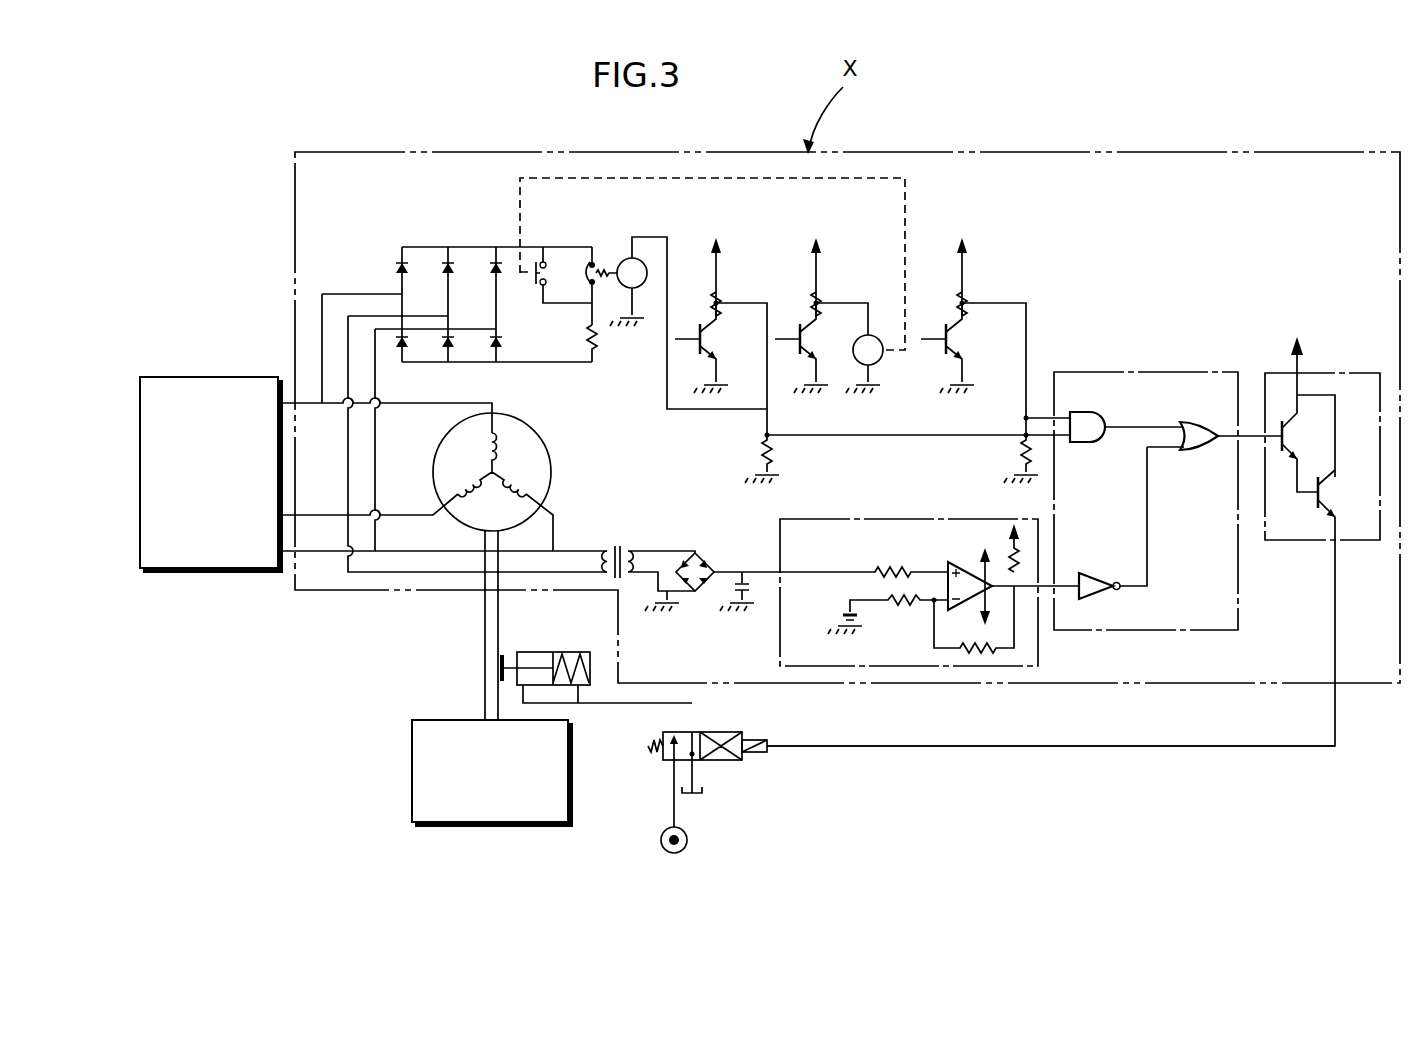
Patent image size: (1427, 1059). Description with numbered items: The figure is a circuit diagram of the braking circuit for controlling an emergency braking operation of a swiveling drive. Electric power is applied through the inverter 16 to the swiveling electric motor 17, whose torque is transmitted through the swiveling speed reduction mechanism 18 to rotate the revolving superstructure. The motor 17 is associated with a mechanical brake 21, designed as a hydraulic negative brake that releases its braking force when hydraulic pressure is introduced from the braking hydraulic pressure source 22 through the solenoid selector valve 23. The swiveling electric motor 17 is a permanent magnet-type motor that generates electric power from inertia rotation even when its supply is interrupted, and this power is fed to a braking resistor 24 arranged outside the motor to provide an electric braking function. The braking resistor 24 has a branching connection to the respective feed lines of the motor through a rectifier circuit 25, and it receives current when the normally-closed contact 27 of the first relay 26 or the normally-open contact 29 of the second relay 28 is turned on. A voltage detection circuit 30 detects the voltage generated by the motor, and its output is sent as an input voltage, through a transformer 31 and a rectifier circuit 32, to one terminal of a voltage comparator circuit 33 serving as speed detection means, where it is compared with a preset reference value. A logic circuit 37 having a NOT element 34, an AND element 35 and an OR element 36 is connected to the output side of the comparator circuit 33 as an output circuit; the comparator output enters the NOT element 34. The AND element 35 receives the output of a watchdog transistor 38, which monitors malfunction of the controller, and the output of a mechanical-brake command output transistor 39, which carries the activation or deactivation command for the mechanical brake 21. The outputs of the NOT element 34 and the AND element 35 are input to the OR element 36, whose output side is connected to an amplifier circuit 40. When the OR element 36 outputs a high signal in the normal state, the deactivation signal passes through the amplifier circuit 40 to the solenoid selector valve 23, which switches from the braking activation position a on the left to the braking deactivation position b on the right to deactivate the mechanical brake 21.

The inverter 16 is at (240, 572).
The swiveling electric motor 17 is at (552, 463).
The swiveling speed reduction mechanism 18 is at (497, 823).
The mechanical brake 21 is at (578, 686).
The braking hydraulic pressure source 22 is at (661, 846).
The solenoid selector valve 23 is at (668, 762).
The braking resistor 24 is at (602, 338).
The rectifier circuit 25 is at (396, 275).
The first relay 26 is at (647, 260).
The normally-closed contact 27 is at (584, 270).
The second relay 28 is at (881, 357).
The normally-open contact 29 is at (551, 268).
The voltage detection circuit 30 is at (407, 578).
The transformer 31 is at (625, 548).
The rectifier circuit 32 is at (703, 550).
The voltage comparator circuit 33 is at (912, 518).
The NOT element 34 is at (1104, 600).
The AND element 35 is at (1100, 410).
The OR element 36 is at (1196, 452).
The logic circuit 37 is at (1201, 356).
The watchdog transistor 38 is at (717, 338).
The mechanical-brake command output transistor 39 is at (966, 338).
The amplifier circuit 40 is at (1361, 374).